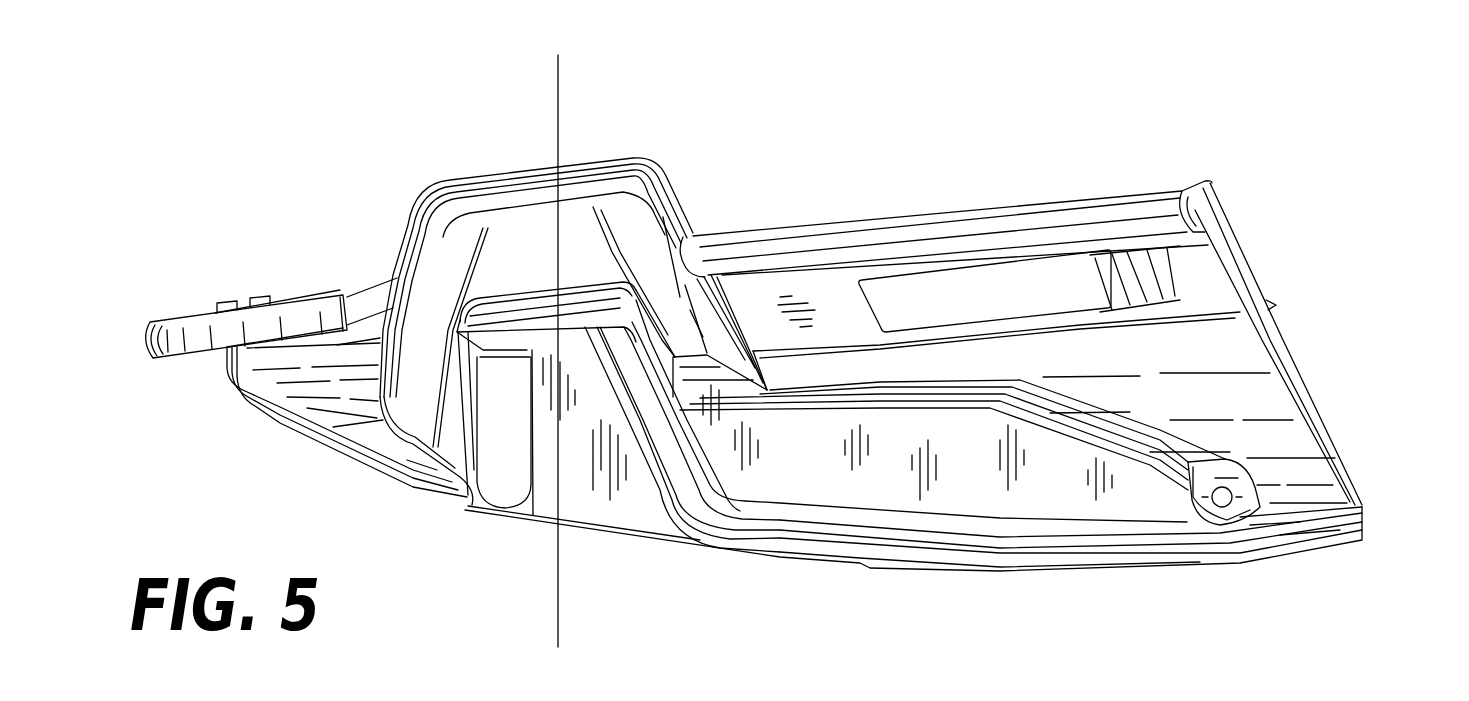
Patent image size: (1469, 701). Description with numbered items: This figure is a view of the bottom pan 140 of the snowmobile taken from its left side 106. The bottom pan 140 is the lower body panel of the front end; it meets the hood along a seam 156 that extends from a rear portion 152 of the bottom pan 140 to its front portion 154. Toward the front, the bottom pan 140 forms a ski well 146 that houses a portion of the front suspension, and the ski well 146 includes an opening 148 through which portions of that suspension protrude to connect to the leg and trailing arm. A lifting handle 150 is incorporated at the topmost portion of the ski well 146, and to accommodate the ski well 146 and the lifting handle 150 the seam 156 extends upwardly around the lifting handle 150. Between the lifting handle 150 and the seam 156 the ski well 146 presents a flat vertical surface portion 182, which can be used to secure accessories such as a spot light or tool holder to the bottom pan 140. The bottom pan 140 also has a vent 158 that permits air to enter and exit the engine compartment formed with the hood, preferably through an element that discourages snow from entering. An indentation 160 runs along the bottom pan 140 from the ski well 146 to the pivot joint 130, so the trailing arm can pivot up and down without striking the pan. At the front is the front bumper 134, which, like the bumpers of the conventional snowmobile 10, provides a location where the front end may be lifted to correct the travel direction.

The conventional snowmobile 10 is at (503, 647).
The left side 106 is at (940, 595).
The pivot joint 130 is at (1220, 505).
The front bumper 134 is at (160, 340).
The bottom pan 140 is at (1280, 441).
The ski well 146 is at (616, 530).
The opening 148 is at (500, 478).
The lifting handle 150 is at (563, 317).
The rear portion of the bottom pan 152 is at (1277, 298).
The front portion of the bottom pan 154 is at (248, 395).
The seam 156 is at (450, 182).
The vent 158 is at (1011, 311).
The indentation 160 is at (793, 470).
The flat vertical surface portion 182 is at (545, 267).